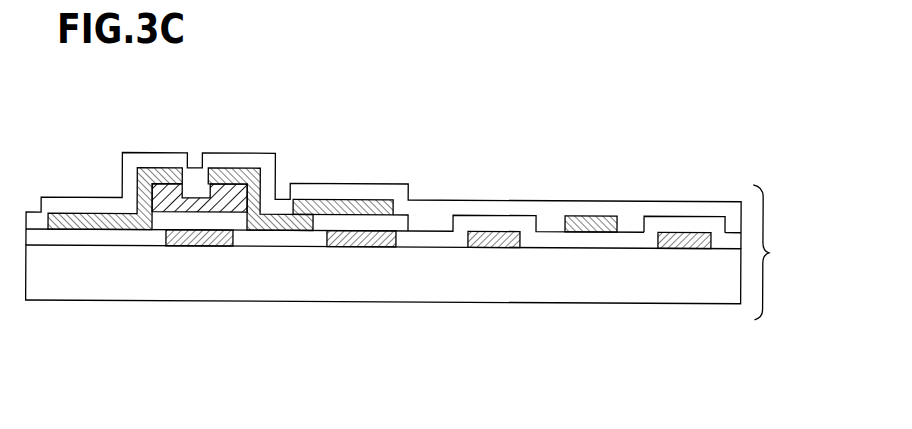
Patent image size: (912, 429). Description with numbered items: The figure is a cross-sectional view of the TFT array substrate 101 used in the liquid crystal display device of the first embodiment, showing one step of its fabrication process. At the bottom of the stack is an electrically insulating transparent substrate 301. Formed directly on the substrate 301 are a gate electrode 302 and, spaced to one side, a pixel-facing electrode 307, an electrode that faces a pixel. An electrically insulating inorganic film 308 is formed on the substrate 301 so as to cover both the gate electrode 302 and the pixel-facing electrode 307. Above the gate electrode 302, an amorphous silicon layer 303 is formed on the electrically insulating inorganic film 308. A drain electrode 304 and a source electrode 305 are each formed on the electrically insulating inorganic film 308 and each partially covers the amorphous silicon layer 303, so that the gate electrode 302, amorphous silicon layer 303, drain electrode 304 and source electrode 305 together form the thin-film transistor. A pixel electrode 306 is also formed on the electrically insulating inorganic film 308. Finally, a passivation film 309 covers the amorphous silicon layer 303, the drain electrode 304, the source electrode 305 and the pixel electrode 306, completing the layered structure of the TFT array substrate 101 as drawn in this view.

The TFT array substrate 101 is at (792, 252).
The electrically insulating transparent substrate 301 is at (383, 314).
The gate electrode 302 is at (199, 302).
The amorphous silicon layer 303 is at (209, 139).
The drain electrode 304 is at (115, 174).
The source electrode 305 is at (343, 157).
The pixel electrode 306 is at (592, 176).
The pixel-facing electrode 307 is at (681, 306).
The electrically insulating inorganic film 308 is at (682, 183).
The passivation film 309 is at (384, 184).